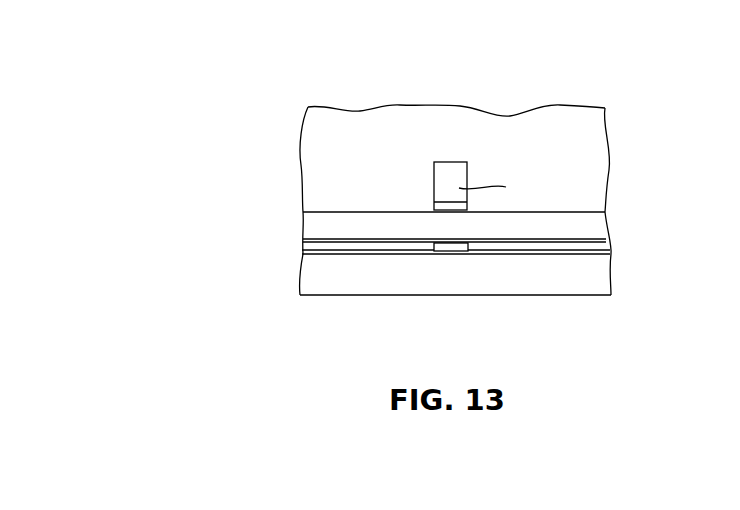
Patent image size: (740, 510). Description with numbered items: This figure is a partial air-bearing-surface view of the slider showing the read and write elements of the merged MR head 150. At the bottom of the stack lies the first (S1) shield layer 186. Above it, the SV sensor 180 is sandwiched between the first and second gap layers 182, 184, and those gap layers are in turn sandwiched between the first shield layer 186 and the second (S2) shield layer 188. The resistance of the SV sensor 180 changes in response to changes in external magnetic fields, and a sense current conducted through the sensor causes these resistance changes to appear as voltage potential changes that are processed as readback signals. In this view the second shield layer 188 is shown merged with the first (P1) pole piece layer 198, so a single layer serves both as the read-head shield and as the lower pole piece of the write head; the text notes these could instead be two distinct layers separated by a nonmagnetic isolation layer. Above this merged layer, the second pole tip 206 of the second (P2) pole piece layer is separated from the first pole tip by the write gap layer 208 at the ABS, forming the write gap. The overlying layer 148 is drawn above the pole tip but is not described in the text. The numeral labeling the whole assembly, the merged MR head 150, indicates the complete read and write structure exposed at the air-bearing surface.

The merged MR head 150 is at (625, 122).
The upper layer 148 is at (313, 134).
The second pole tip 206 is at (455, 168).
The write gap layer 208 is at (450, 205).
The second shield layer 188 is at (306, 230).
The first pole piece layer 198 is at (456, 233).
The SV sensor 180 is at (449, 252).
The first gap layer 182 is at (363, 256).
The second gap layer 184 is at (570, 243).
The first shield layer 186 is at (600, 277).